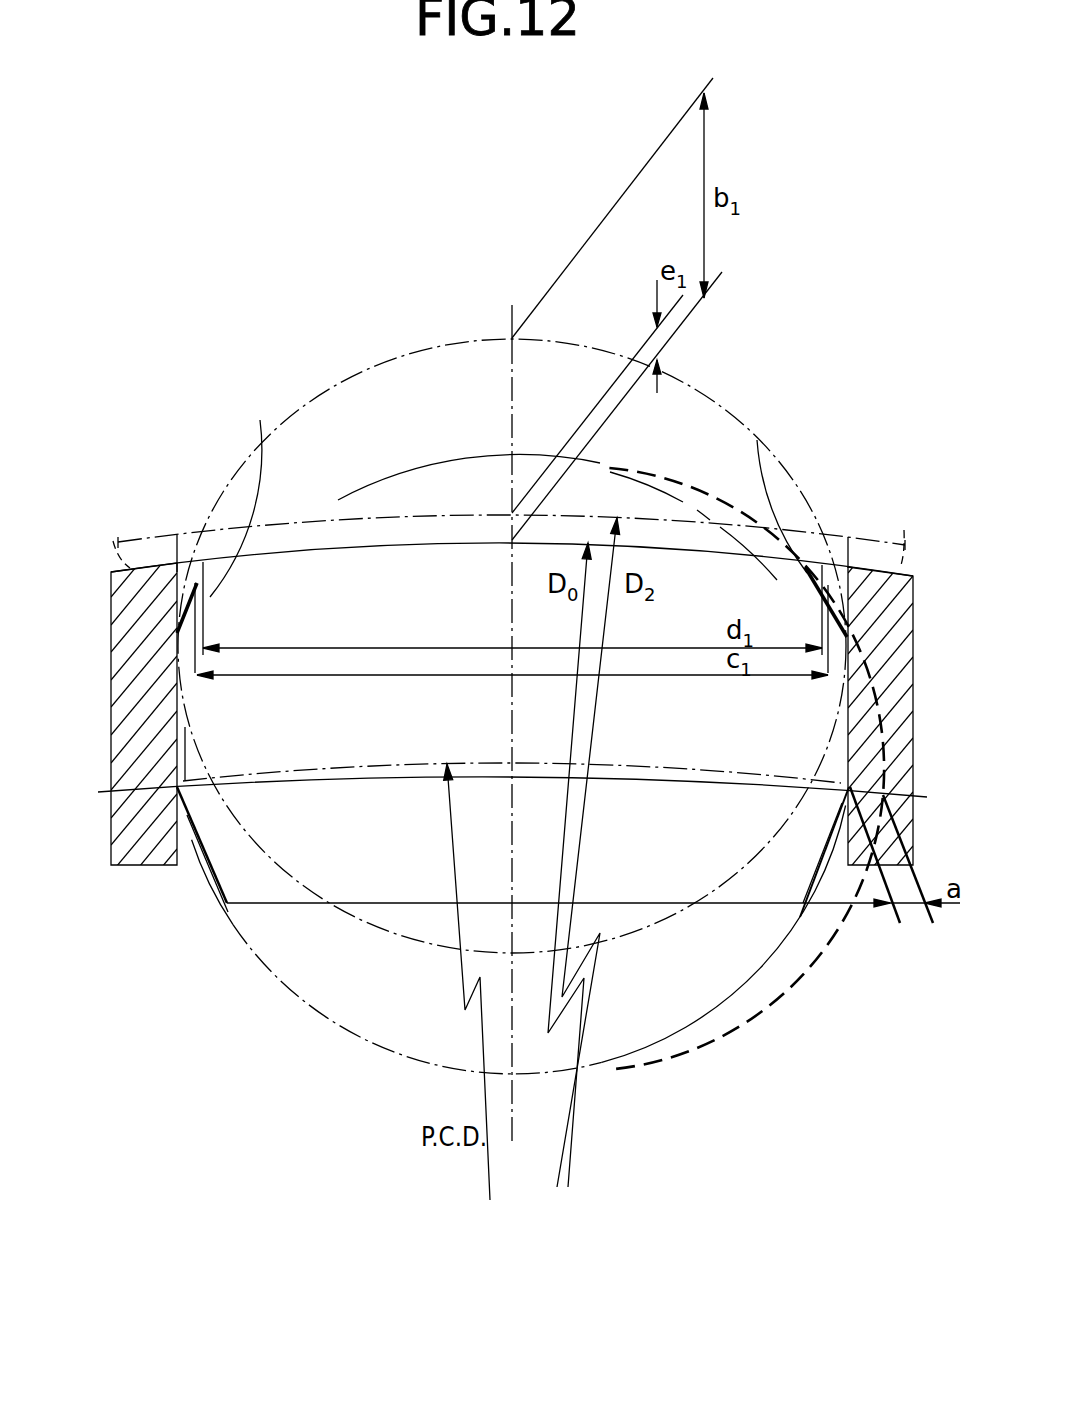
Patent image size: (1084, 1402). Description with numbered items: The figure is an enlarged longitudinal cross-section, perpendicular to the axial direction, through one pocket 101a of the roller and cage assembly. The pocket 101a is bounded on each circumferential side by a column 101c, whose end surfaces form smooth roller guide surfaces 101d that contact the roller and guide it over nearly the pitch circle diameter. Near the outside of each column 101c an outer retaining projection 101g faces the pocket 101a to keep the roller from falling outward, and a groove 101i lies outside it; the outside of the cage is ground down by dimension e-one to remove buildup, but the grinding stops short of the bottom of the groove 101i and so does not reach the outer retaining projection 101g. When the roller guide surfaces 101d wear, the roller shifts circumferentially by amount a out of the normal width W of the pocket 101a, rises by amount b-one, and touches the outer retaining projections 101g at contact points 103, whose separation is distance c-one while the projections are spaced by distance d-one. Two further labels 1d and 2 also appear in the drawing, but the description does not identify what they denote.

The pocket 101a is at (404, 874).
The column 101c is at (164, 660).
The roller guide surface 101d is at (178, 840).
The outer retaining projection 101g is at (175, 512).
The groove 101i is at (120, 532).
The contact point 103 is at (757, 440).
The raceway 1d is at (512, 796).
The rolling element 2 is at (622, 930).